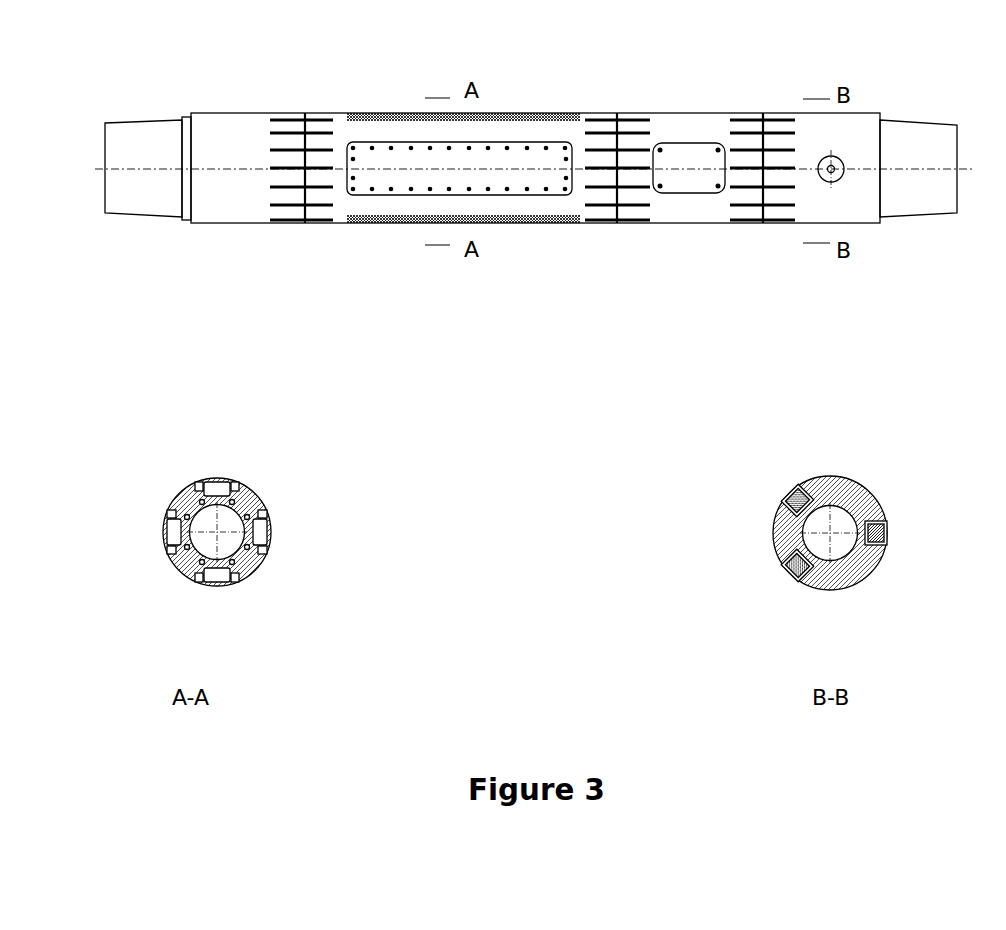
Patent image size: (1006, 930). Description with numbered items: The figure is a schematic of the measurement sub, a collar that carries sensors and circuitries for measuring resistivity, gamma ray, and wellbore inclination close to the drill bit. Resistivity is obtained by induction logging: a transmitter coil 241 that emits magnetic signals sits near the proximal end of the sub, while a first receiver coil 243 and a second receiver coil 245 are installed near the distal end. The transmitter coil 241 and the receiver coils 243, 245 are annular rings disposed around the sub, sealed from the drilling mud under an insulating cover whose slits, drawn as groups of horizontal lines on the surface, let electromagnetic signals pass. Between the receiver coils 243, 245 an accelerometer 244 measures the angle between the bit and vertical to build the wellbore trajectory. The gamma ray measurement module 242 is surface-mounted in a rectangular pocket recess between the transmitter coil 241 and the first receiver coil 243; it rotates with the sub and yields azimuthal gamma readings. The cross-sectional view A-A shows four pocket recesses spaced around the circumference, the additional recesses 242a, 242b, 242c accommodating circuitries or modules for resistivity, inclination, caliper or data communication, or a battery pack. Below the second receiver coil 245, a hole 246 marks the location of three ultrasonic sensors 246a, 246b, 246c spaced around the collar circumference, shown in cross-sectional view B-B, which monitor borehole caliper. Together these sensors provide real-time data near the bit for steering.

The transmitter coil 241 is at (305, 113).
The gamma ray measurement module 242 is at (402, 180).
The pocket recess 242a is at (217, 476).
The pocket recess 242b is at (267, 507).
The pocket recess 242c is at (217, 586).
The first receiver coil 243 is at (617, 113).
The accelerometer 244 is at (702, 177).
The second receiver coil 245 is at (763, 113).
The hole 246 is at (838, 160).
The ultrasonic sensor 246a is at (812, 490).
The ultrasonic sensor 246b is at (885, 517).
The ultrasonic sensor 246c is at (805, 583).